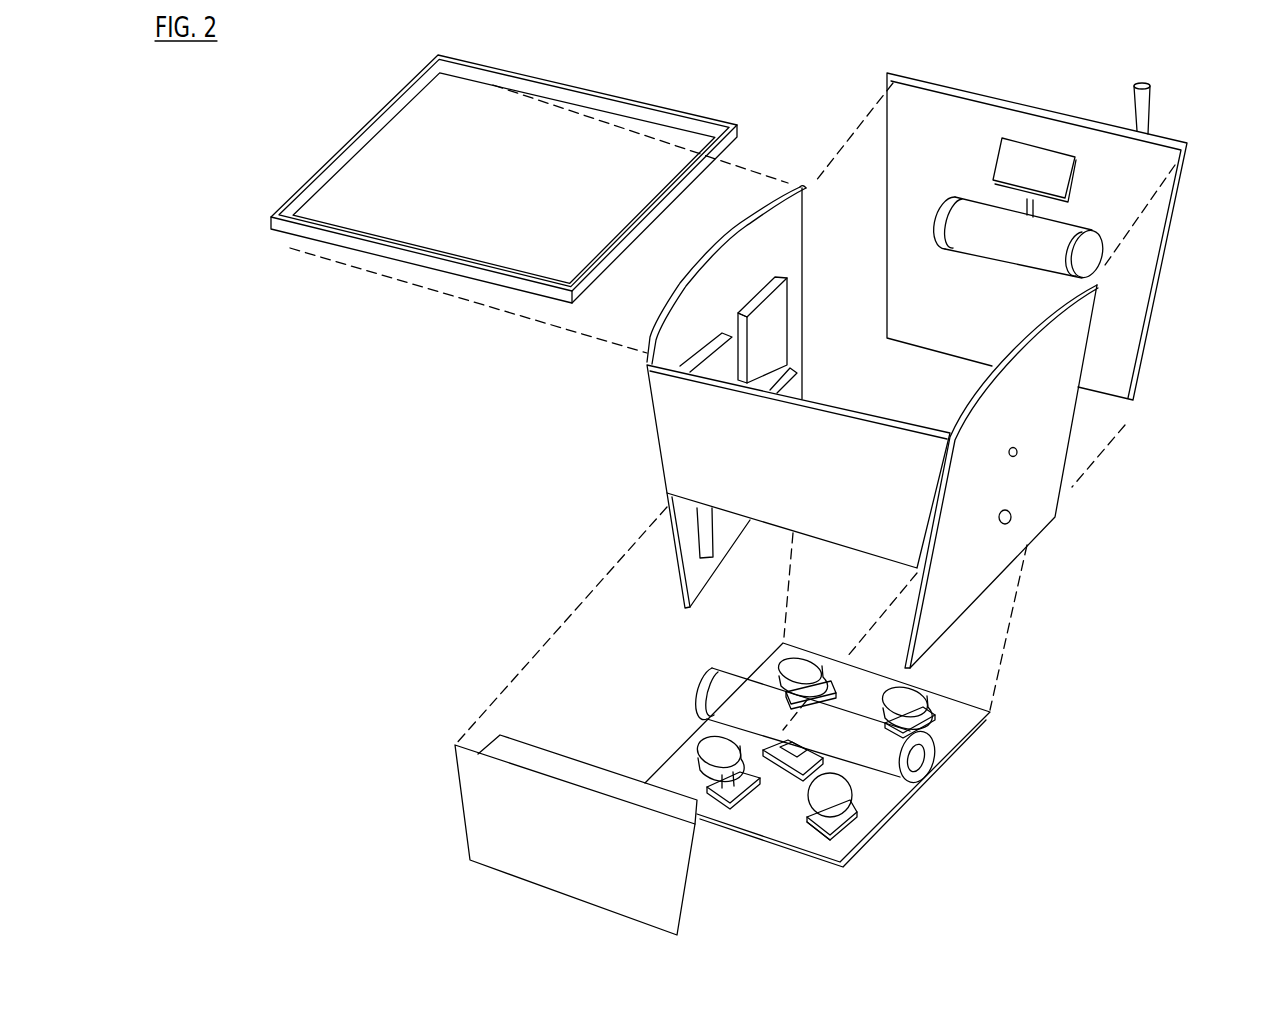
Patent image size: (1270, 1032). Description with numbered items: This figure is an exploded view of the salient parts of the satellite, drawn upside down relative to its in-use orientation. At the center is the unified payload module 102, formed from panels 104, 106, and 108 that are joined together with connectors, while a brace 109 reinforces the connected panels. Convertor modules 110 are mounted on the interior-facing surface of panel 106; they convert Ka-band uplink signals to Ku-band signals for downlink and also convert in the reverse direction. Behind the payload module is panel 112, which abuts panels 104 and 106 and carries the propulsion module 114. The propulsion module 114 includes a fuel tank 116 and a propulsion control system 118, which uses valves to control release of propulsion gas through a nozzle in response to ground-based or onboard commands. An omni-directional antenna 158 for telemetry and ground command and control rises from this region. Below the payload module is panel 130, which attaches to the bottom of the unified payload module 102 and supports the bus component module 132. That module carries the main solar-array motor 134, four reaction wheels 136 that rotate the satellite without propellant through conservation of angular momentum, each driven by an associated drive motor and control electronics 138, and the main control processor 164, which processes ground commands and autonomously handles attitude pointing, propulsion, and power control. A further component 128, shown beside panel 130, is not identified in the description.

The unified payload module 102 is at (1092, 505).
The panel 104 is at (1058, 394).
The panel 106 is at (742, 287).
The panel 108 is at (815, 474).
The brace 109 is at (403, 307).
The convertor modules 110 is at (777, 332).
The panel 112 is at (955, 160).
The propulsion module 114 is at (1104, 203).
The fuel tank 116 is at (1028, 249).
The propulsion control system 118 is at (1047, 184).
The front panel 128 is at (528, 760).
The panel 130 is at (950, 730).
The bus component module 132 is at (966, 756).
The main solar-array motor 134 is at (890, 773).
The reaction wheels 136 is at (842, 795).
The drive motor and control electronics 138 is at (820, 822).
The omni-directional antenna 158 is at (1152, 88).
The main control processor 164 is at (788, 767).